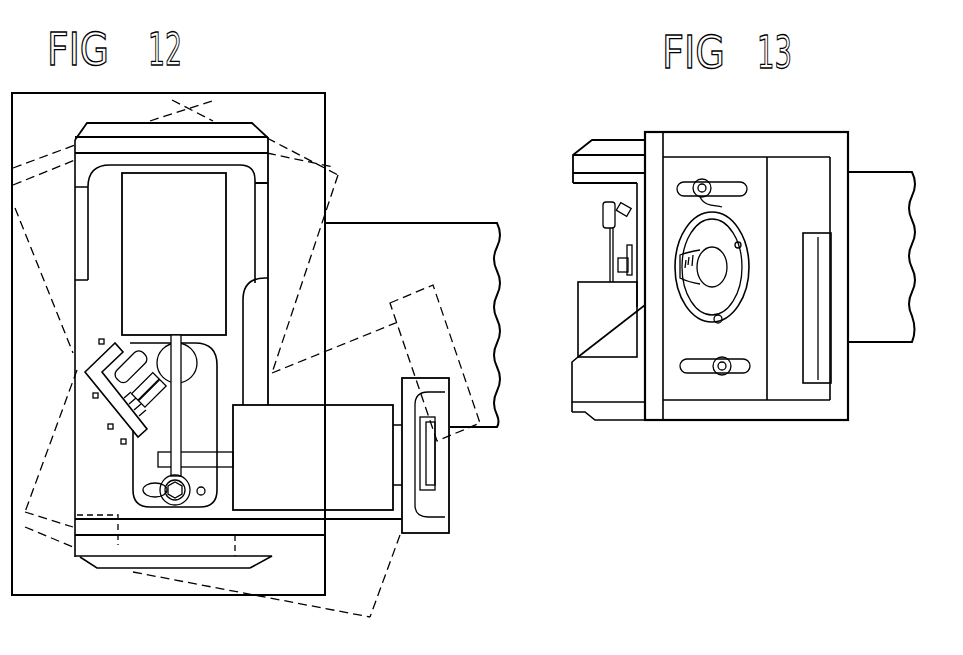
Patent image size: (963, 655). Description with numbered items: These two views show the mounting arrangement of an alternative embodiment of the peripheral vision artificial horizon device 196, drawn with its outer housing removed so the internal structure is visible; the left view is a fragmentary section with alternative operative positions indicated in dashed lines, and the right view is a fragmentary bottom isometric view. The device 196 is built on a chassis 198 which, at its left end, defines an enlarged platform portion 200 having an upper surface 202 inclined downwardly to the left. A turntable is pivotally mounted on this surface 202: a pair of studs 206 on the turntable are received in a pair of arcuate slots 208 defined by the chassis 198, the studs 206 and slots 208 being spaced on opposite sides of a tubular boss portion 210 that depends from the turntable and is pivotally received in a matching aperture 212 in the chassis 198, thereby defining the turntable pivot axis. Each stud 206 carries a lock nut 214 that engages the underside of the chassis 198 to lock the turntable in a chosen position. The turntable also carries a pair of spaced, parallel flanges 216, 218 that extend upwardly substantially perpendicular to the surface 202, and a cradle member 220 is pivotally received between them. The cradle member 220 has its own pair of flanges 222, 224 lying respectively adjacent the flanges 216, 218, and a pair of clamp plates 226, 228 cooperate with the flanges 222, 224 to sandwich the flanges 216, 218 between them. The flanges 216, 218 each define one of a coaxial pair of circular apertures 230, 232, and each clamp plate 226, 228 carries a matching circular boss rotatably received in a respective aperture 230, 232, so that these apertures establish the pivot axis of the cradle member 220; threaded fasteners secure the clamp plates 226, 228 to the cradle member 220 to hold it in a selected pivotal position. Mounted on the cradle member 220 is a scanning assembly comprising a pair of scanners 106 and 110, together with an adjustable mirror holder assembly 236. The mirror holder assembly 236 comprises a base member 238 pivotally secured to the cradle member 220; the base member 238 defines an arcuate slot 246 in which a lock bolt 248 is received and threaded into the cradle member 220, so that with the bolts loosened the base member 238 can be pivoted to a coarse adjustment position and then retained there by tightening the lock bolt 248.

In FIG. 12, the peripheral vision artificial horizon device 196 is at (409, 212).
In FIG. 13, the peripheral vision artificial horizon device 196 is at (883, 400).
In FIG. 12, the chassis 198 is at (457, 247).
In FIG. 13, the chassis 198 is at (888, 187).
In FIG. 12, the enlarged platform portion 200 is at (334, 117).
In FIG. 13, the enlarged platform portion 200 is at (784, 128).
In FIG. 12, the upper surface 202 is at (288, 597).
In FIG. 13, the studs 206 is at (703, 178).
In FIG. 13, the arcuate slots 208 is at (728, 190).
In FIG. 13, the tubular boss portion 210 is at (741, 246).
In FIG. 13, the aperture 212 is at (721, 320).
In FIG. 13, the lock nut 214 is at (708, 198).
In FIG. 12, the flange 216 is at (260, 545).
In FIG. 13, the flange 216 is at (578, 162).
In FIG. 12, the flange 218 is at (265, 140).
In FIG. 13, the flange 218 is at (573, 405).
In FIG. 12, the cradle member 220 is at (438, 522).
In FIG. 13, the cradle member 220 is at (588, 382).
In FIG. 12, the flange 222 is at (400, 533).
In FIG. 12, the flange 224 is at (210, 160).
In FIG. 12, the clamp plate 226 is at (98, 562).
In FIG. 13, the clamp plate 226 is at (615, 415).
In FIG. 12, the clamp plate 228 is at (137, 130).
In FIG. 13, the clamp plate 228 is at (617, 147).
In FIG. 12, the circular aperture 230 is at (75, 512).
In FIG. 12, the circular aperture 232 is at (115, 119).
In FIG. 12, the adjustable mirror holder assembly 236 is at (151, 436).
In FIG. 13, the adjustable mirror holder assembly 236 is at (622, 244).
In FIG. 12, the base member 238 is at (207, 395).
In FIG. 12, the arcuate slot 246 is at (205, 497).
In FIG. 12, the lock bolt 248 is at (175, 505).
In FIG. 12, the scanner 110 is at (194, 250).
In FIG. 13, the scanner 110 is at (626, 294).
In FIG. 12, the scanner 106 is at (335, 444).